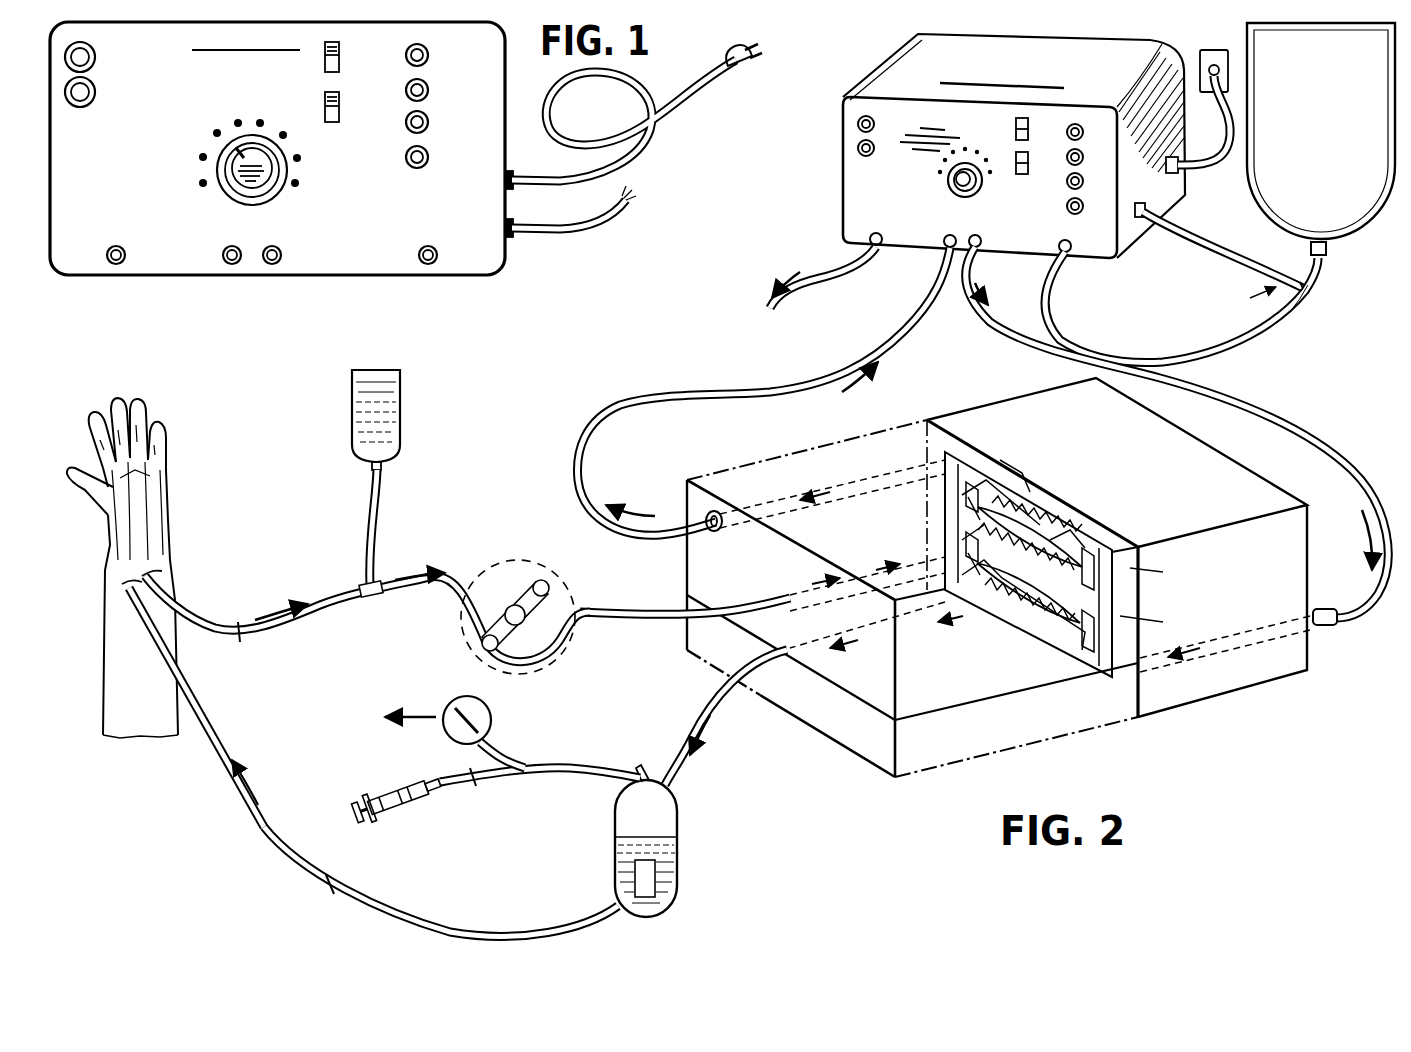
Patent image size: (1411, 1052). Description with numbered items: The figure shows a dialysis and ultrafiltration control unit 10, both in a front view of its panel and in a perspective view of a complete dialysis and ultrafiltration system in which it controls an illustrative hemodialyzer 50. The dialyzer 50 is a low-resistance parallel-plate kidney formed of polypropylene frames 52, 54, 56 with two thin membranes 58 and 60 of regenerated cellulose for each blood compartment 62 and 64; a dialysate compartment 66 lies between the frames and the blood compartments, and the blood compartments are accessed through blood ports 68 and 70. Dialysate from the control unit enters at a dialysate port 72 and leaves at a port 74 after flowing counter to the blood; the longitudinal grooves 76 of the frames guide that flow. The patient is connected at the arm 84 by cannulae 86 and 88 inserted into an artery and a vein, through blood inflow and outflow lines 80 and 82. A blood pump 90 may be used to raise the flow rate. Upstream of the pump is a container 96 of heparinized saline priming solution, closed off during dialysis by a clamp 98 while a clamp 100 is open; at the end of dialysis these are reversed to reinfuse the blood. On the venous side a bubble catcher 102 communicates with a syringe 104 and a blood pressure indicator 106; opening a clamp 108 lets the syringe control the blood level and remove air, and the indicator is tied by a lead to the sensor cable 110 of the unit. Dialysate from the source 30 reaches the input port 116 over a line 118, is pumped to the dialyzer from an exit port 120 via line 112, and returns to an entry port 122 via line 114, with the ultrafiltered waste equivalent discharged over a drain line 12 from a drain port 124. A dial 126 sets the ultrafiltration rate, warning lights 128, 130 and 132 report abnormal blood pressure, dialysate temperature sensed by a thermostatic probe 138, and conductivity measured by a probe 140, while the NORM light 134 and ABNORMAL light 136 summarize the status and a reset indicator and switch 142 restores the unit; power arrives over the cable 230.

In FIG. 1, the dialysis and ultrafiltration control unit 10 is at (358, 290).
In FIG. 2, the dialysis and ultrafiltration control unit 10 is at (888, 72).
In FIG. 2, the drain line 12 is at (834, 262).
In FIG. 2, the dialysate source 30 is at (1348, 212).
In FIG. 2, the hemodialyzer 50 is at (998, 587).
In FIG. 2, the frame 52 is at (1161, 574).
In FIG. 2, the frame 54 is at (1158, 622).
In FIG. 2, the frame 56 is at (1143, 714).
In FIG. 2, the membrane 58 is at (1055, 540).
In FIG. 2, the membrane 60 is at (1057, 558).
In FIG. 2, the blood compartment 62 is at (1040, 537).
In FIG. 2, the blood compartment 64 is at (1033, 597).
In FIG. 2, the dialysate compartment 66 is at (1088, 665).
In FIG. 2, the blood port 68 is at (786, 598).
In FIG. 2, the blood port 70 is at (786, 656).
In FIG. 2, the dialysate port 72 is at (1328, 627).
In FIG. 2, the port 74 is at (695, 512).
In FIG. 2, the ridges 76 is at (1000, 500).
In FIG. 2, the blood inflow line 80 is at (330, 615).
In FIG. 2, the blood outflow line 82 is at (228, 773).
In FIG. 2, the arm 84 is at (130, 552).
In FIG. 2, the cannula 86 is at (152, 582).
In FIG. 2, the cannula 88 is at (122, 585).
In FIG. 2, the blood pump 90 is at (562, 583).
In FIG. 2, the container of priming solution 96 is at (403, 414).
In FIG. 2, the clamp 98 is at (368, 514).
In FIG. 2, the clamp 100 is at (243, 633).
In FIG. 2, the bubble catcher 102 is at (682, 830).
In FIG. 2, the syringe 104 is at (388, 792).
In FIG. 2, the blood pressure indicator 106 is at (492, 712).
In FIG. 2, the clamp 108 is at (326, 881).
In FIG. 1, the sensor cable 110 is at (596, 226).
In FIG. 2, the line 112 is at (1322, 448).
In FIG. 2, the line 114 is at (722, 395).
In FIG. 1, the input port 116 is at (437, 257).
In FIG. 2, the input port 116 is at (1069, 242).
In FIG. 2, the line 118 is at (1232, 350).
In FIG. 1, the exit port 120 is at (279, 261).
In FIG. 2, the exit port 120 is at (980, 236).
In FIG. 1, the entry port 122 is at (228, 262).
In FIG. 2, the entry port 122 is at (950, 235).
In FIG. 1, the drain port 124 is at (112, 262).
In FIG. 2, the drain port 124 is at (877, 233).
In FIG. 1, the dial 126 is at (240, 168).
In FIG. 1, the warning light 128 is at (420, 50).
In FIG. 1, the warning light 130 is at (408, 84).
In FIG. 1, the warning light 132 is at (406, 122).
In FIG. 1, the NORM light 134 is at (84, 52).
In FIG. 1, the ABNORMAL light 136 is at (82, 97).
In FIG. 2, the thermostatic probe 138 is at (1284, 281).
In FIG. 2, the probe 140 is at (1283, 297).
In FIG. 1, the reset indicator and switch 142 is at (408, 162).
In FIG. 1, the cable 230 is at (655, 140).
In FIG. 2, the cable 230 is at (1200, 176).